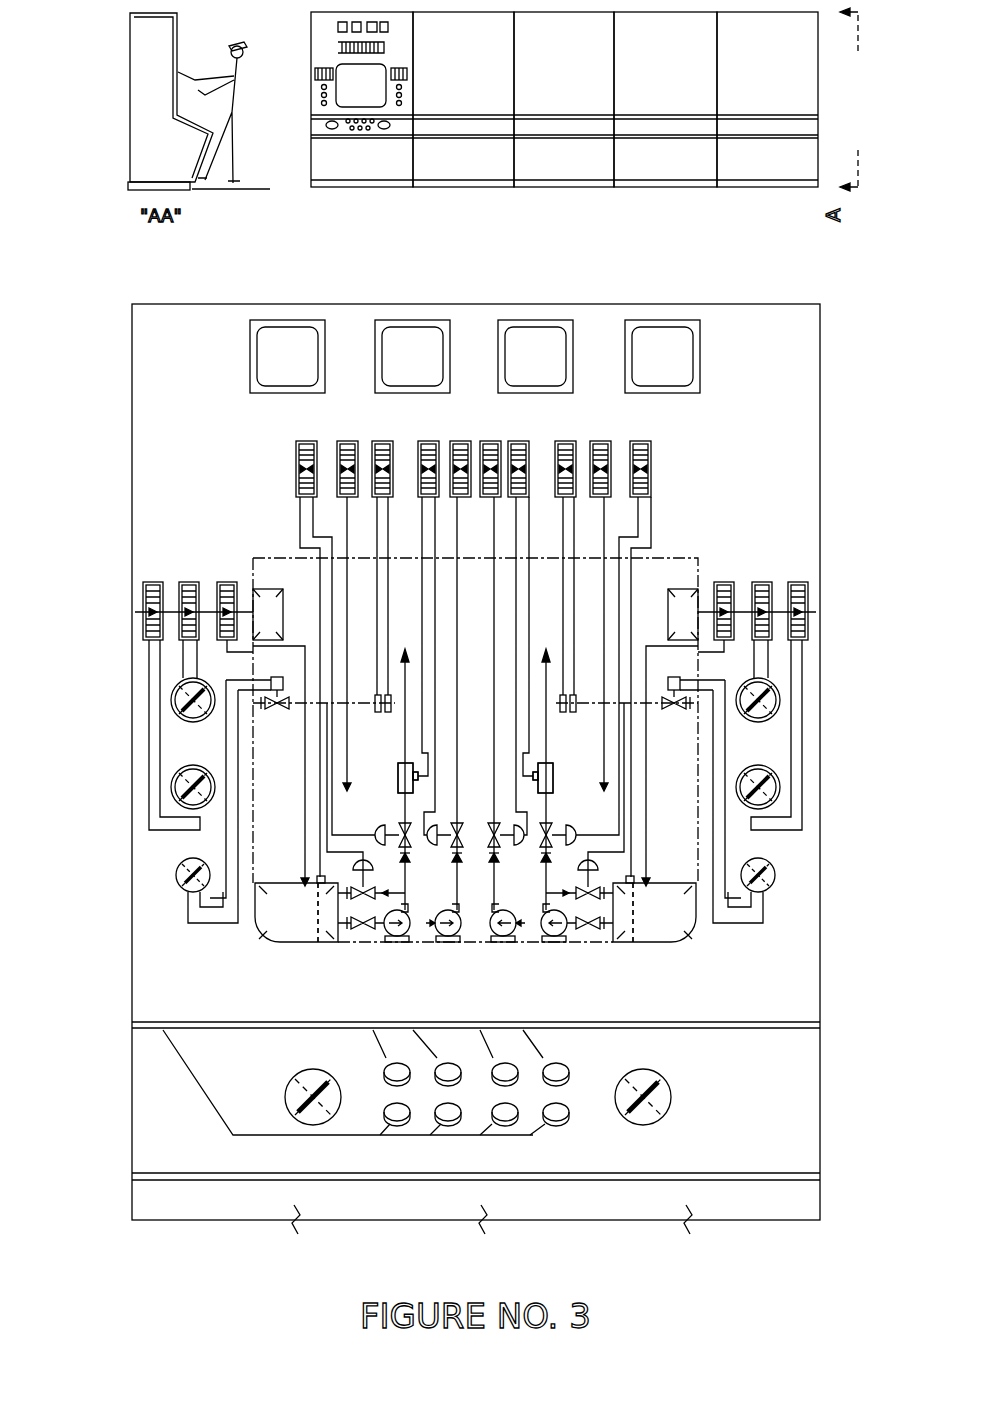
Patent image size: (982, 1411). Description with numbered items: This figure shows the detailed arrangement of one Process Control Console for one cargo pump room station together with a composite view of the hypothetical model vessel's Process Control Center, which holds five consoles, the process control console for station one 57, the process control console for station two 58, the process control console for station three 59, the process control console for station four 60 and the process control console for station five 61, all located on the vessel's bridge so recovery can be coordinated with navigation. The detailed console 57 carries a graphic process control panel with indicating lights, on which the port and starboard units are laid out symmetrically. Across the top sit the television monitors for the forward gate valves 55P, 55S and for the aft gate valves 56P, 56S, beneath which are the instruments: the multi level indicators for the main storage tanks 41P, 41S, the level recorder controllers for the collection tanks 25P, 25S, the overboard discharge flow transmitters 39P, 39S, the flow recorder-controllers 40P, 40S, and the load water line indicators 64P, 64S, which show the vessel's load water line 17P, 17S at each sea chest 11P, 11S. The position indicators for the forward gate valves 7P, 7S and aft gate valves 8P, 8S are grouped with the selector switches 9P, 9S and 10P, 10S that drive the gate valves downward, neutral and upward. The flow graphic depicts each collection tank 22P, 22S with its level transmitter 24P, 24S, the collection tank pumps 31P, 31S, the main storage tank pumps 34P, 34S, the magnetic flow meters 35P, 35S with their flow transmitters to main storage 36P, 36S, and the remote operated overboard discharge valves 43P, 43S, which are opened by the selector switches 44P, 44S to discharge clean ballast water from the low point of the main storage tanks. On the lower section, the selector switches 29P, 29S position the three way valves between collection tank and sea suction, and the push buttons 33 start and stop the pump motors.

The process control console - station no. 1 57 is at (369, 292).
The process control console - station no. 2 58 is at (463, 120).
The process control console - station no. 3 59 is at (564, 120).
The process control console - station no. 4 60 is at (665, 120).
The process control console - station no. 5 61 is at (767, 120).
The television monitor - gate valve forward 55P is at (287, 372).
The television monitor - gate valve aft 56P is at (412, 372).
The television monitor - gate valve forward 55S is at (535, 372).
The television monitor - gate valve aft 56S is at (662, 372).
The multi level indicator no. 1 main storage tanks 41P is at (331, 439).
The multi level indicator no. 1 main storage tanks 41S is at (617, 439).
The level recorder controller collection tank 25P is at (294, 485).
The level recorder controller collection tank 25S is at (654, 482).
The transmitter - flow overboard discharge 39P is at (370, 499).
The transmitter - flow overboard discharge 39S is at (580, 499).
The flow recorder-controller 40P is at (416, 500).
The flow recorder-controller 40S is at (536, 500).
The load water line indicator 64P is at (461, 439).
The load water line indicator 64S is at (489, 439).
The position indicator - gate valve forward 7P is at (141, 597).
The position indicator - gate valve forward 7S is at (810, 597).
The position indicator - gate valve aft 8P is at (150, 652).
The position indicator - gate valve aft 8S is at (801, 652).
The load water line - vessel 17P is at (214, 581).
The load water line - vessel 17S is at (737, 581).
The sea chest 11P is at (268, 614).
The sea chest 11S is at (683, 614).
The remote operated valve - overboard discharge open-close 43P is at (276, 706).
The remote operated valve - overboard discharge open-close 43S is at (672, 706).
The magnetic flow meter 35P is at (398, 774).
The transmitter - flow to main storage 36P is at (385, 783).
The magnetic flow meter 35S is at (553, 774).
The transmitter - flow to main storage 36S is at (567, 783).
The selector switch - gate valve forward open-neutral-close 9P is at (177, 717).
The selector switch - gate valve aft open-neutral-close 10P is at (176, 802).
The selector switch - remote operated valve - open-close 44P is at (181, 887).
The selector switch - gate valve forward open-neutral-close 9S is at (774, 717).
The selector switch - gate valve aft open-neutral-close 10S is at (775, 802).
The selector switch - remote operated valve - open-close 44S is at (770, 887).
The collection tank 22P is at (296, 912).
The collection tank 22S is at (654, 912).
The level transmitter - collection tank 24P is at (316, 927).
The level transmitter - collection tank 24S is at (635, 927).
The selector switch - three way valve collection tank/sea 29P is at (362, 934).
The selector switch - three way valve collection tank/sea 29S is at (589, 934).
The pump - collection tank 31P is at (393, 811).
The pump - main storage tanks 34P is at (444, 735).
The pump - main storage tanks 34S is at (503, 735).
The pump - collection tank 31S is at (555, 811).
The push buttons start-stop pump motors 33 is at (171, 1043).